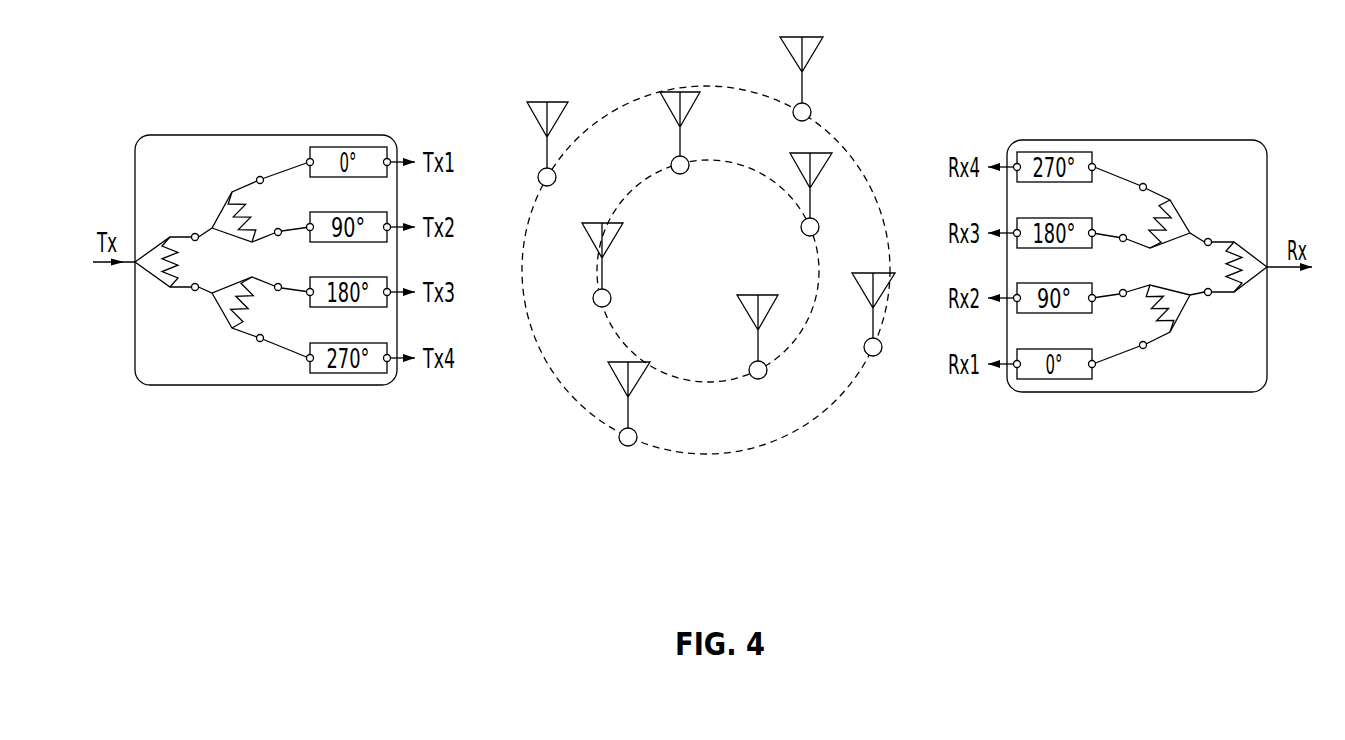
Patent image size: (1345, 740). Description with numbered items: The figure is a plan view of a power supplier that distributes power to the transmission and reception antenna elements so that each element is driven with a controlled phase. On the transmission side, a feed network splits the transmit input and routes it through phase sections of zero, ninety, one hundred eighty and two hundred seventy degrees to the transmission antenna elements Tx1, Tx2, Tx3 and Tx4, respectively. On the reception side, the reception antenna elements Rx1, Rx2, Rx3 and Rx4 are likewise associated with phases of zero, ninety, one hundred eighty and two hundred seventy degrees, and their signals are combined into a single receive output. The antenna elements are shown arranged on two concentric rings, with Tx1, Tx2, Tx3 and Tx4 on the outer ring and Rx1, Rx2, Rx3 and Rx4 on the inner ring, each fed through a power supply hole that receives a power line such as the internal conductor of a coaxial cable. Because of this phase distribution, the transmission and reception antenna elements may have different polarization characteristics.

The transmission antenna element Tx1 is at (532, 169).
The transmission antenna element Tx2 is at (785, 115).
The transmission antenna element Tx3 is at (877, 363).
The transmission antenna element Tx4 is at (615, 442).
The reception antenna element Rx1 is at (685, 178).
The reception antenna element Rx2 is at (613, 295).
The reception antenna element Rx3 is at (747, 358).
The reception antenna element Rx4 is at (797, 236).